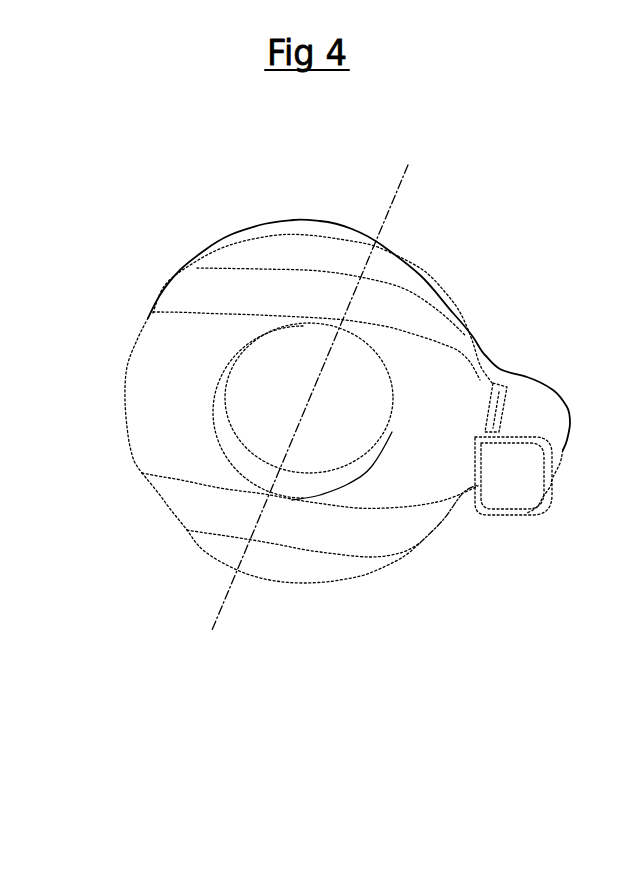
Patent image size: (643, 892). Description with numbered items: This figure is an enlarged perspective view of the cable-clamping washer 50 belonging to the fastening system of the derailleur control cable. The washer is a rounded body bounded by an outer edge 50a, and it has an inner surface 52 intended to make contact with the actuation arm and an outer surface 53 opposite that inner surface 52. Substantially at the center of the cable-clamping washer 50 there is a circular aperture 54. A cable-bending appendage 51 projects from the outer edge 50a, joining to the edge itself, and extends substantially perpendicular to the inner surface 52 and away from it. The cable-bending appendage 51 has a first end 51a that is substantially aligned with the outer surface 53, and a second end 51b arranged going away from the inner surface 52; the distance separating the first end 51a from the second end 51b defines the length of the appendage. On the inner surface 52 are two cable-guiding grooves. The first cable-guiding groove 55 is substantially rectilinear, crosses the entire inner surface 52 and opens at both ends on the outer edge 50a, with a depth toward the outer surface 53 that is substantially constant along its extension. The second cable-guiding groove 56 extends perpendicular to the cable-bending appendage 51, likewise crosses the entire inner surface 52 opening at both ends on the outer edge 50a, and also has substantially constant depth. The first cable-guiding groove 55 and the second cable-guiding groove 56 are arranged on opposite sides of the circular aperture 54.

The cable-clamping washer 50 is at (363, 228).
The outer edge 50a is at (230, 243).
The cable-bending appendage 51 is at (552, 442).
The first end 51a is at (548, 387).
The second end 51b is at (502, 487).
The inner surface 52 is at (158, 405).
The outer surface 53 is at (292, 221).
The circular aperture 54 is at (283, 487).
The first cable-guiding groove 55 is at (387, 310).
The second cable-guiding groove 56 is at (338, 537).